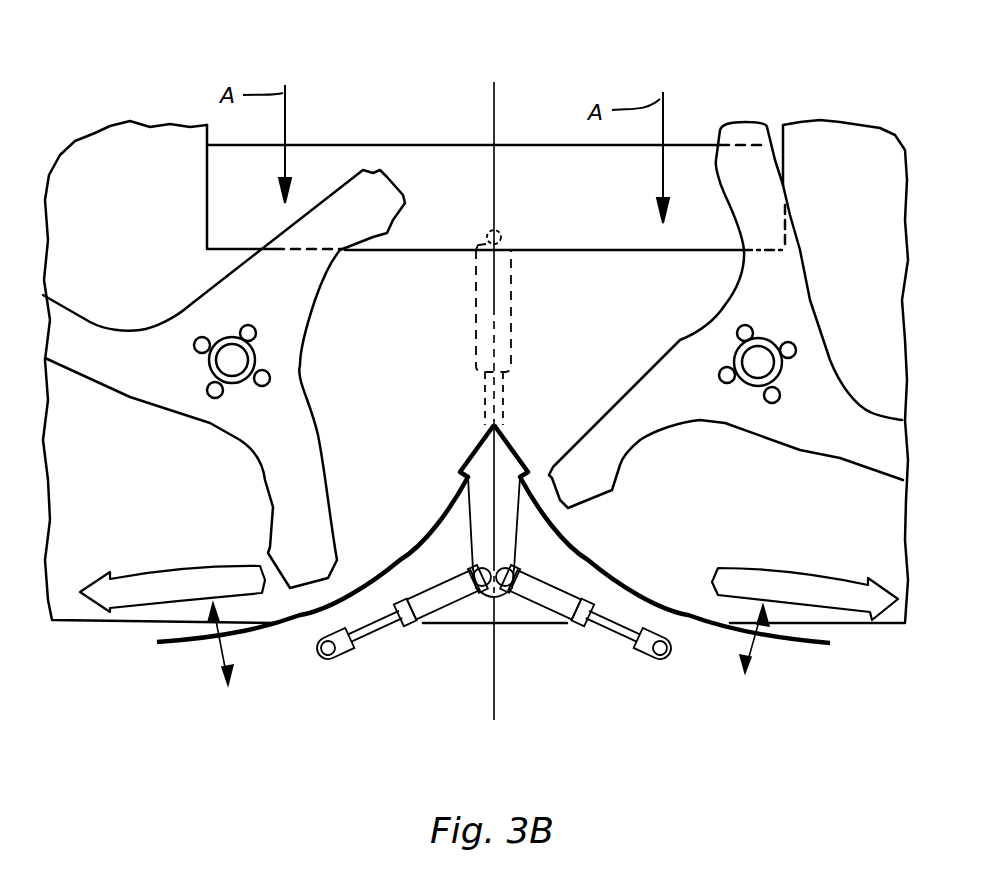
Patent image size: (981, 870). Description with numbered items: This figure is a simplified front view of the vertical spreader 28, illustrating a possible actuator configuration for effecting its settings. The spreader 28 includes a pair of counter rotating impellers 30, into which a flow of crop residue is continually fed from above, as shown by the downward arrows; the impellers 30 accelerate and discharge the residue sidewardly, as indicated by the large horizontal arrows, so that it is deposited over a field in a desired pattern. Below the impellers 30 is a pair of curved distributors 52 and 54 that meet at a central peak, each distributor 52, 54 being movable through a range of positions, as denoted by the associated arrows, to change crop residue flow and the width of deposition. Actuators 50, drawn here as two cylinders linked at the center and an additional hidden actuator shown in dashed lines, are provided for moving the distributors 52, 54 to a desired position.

The spreader 28 is at (866, 112).
The counter rotating impellers 30 is at (388, 177).
The actuators 50 is at (513, 305).
The curved distributor 52 is at (180, 648).
The curved distributor 54 is at (812, 645).